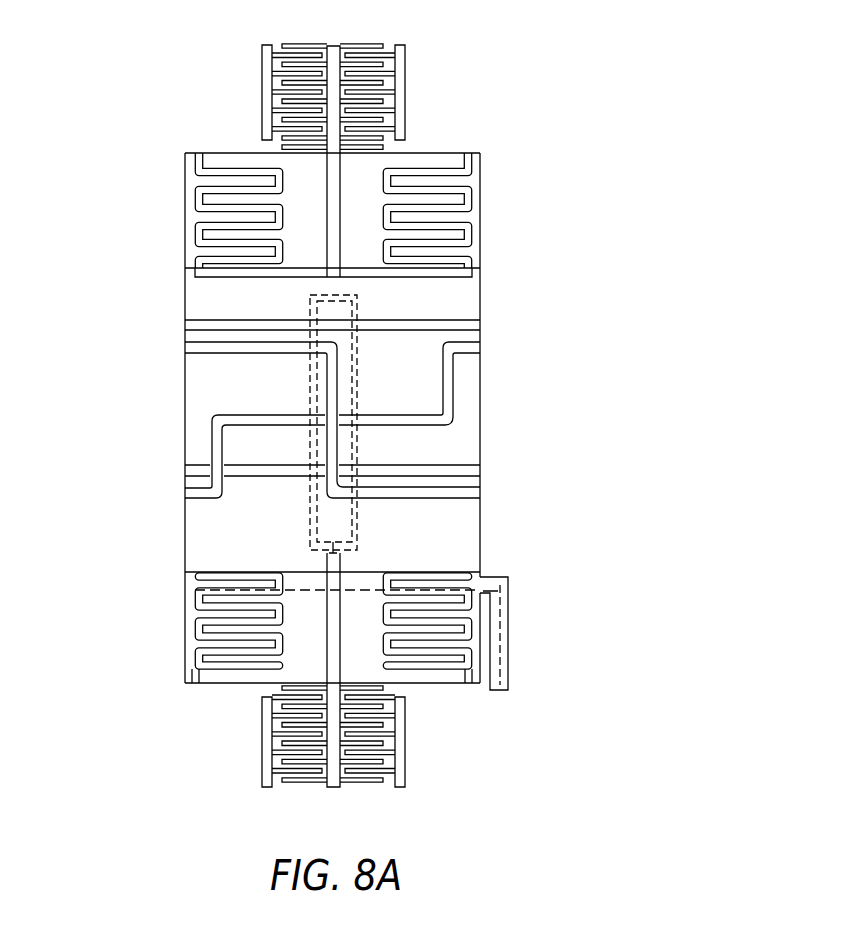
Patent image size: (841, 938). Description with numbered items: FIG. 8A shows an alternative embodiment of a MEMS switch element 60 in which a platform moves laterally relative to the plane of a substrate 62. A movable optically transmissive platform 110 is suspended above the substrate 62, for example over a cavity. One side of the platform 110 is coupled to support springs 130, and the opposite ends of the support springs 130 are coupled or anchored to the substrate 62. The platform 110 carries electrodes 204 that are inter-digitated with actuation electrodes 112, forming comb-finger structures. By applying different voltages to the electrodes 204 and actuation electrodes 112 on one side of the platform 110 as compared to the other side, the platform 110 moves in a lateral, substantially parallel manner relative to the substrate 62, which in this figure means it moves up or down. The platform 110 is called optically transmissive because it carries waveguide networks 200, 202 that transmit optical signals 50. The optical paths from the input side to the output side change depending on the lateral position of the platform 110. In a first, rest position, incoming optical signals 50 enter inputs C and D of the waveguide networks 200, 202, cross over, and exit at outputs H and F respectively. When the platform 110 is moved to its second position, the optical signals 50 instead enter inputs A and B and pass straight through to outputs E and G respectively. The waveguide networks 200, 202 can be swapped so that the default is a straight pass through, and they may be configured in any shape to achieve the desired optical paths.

The optical signals 50 is at (140, 352).
The MEMS switch element 60 is at (588, 143).
The substrate 62 is at (277, 678).
The movable optically transmissive platform 110 is at (457, 310).
The actuation electrodes 112 is at (402, 78).
The support springs 130 is at (197, 198).
The waveguide network 200 is at (211, 325).
The waveguide network 202 is at (218, 352).
The electrodes 204 is at (331, 46).